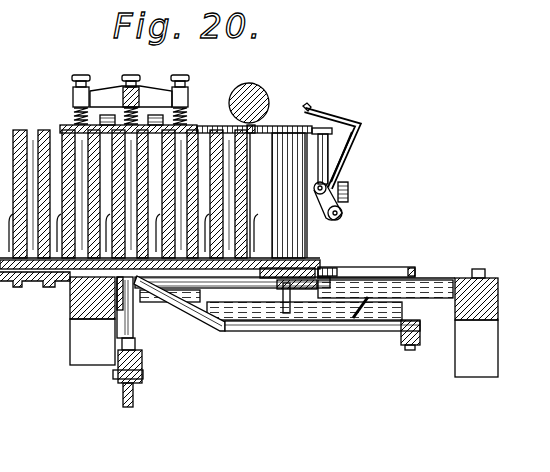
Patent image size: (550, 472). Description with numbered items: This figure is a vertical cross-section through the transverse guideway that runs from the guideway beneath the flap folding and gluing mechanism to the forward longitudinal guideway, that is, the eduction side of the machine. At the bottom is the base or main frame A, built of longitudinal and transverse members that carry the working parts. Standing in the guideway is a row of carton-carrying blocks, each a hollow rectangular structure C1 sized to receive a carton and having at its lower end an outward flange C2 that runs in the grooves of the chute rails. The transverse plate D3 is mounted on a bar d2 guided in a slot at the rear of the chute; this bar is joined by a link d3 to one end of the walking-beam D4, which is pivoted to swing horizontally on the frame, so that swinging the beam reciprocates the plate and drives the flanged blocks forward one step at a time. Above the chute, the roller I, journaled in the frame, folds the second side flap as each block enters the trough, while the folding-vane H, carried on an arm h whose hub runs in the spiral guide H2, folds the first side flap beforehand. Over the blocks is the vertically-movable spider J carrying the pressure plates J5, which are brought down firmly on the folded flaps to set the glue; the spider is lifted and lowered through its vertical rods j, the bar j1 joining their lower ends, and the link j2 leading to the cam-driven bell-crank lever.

The hollow rectangular structure C1 is at (22, 128).
The plates J5 is at (63, 123).
The vertically-movable spider J is at (105, 88).
The roller I is at (262, 95).
The folding-vane H is at (330, 117).
The arm h is at (347, 160).
The spiral guide H2 is at (347, 190).
The transverse plate D3 is at (250, 260).
The base or main frame A is at (500, 303).
The flange C2 is at (70, 298).
The rods j is at (135, 325).
The bar j1 is at (143, 360).
The link j2 is at (135, 402).
The bars d2 is at (248, 280).
The links d3 is at (310, 332).
The walking-beam D4 is at (407, 343).